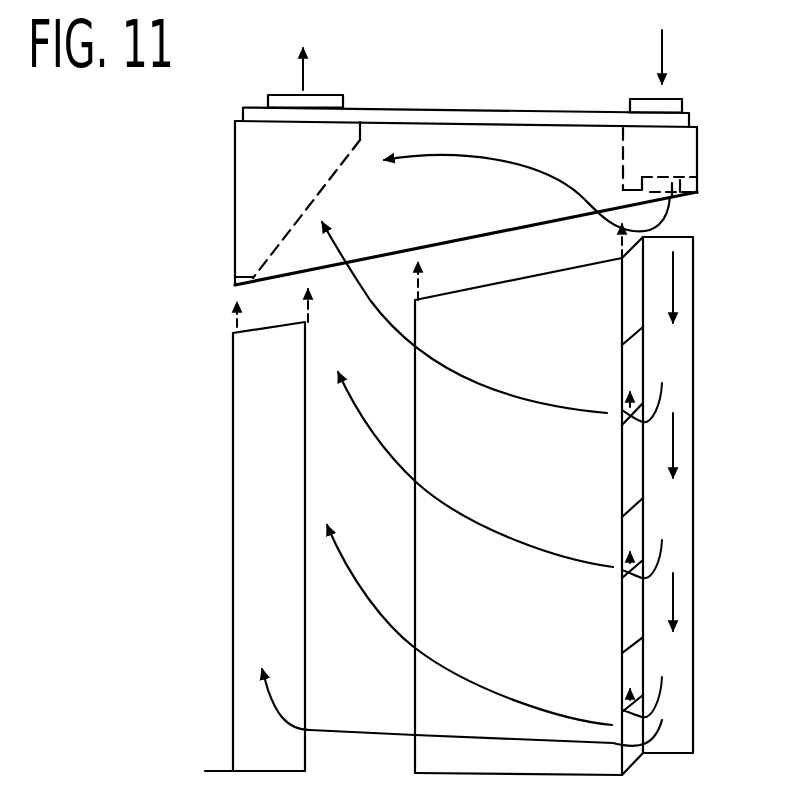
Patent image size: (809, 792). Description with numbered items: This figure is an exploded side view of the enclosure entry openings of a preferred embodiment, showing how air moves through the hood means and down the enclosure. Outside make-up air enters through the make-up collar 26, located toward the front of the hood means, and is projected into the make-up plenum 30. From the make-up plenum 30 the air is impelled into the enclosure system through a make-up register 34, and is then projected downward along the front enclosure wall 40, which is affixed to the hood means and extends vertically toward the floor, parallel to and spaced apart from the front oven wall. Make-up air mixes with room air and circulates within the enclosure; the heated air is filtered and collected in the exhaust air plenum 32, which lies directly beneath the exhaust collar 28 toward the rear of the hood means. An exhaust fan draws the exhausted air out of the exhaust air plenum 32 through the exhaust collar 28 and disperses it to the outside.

The make-up collar 26 is at (677, 103).
The exhaust collar 28 is at (283, 95).
The make-up plenum 30 is at (670, 153).
The exhaust air plenum 32 is at (268, 197).
The make-up register 34 is at (699, 172).
The front enclosure wall 40 is at (693, 362).